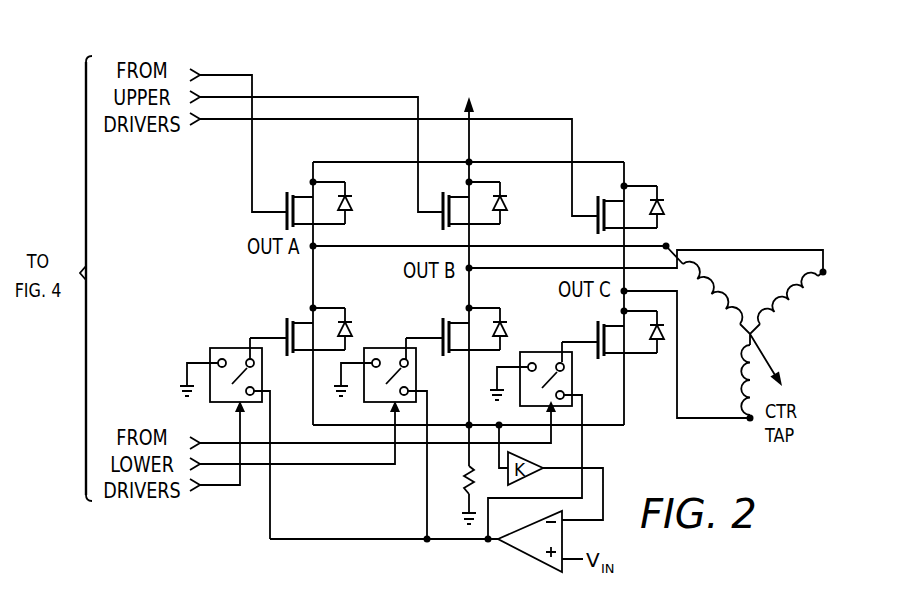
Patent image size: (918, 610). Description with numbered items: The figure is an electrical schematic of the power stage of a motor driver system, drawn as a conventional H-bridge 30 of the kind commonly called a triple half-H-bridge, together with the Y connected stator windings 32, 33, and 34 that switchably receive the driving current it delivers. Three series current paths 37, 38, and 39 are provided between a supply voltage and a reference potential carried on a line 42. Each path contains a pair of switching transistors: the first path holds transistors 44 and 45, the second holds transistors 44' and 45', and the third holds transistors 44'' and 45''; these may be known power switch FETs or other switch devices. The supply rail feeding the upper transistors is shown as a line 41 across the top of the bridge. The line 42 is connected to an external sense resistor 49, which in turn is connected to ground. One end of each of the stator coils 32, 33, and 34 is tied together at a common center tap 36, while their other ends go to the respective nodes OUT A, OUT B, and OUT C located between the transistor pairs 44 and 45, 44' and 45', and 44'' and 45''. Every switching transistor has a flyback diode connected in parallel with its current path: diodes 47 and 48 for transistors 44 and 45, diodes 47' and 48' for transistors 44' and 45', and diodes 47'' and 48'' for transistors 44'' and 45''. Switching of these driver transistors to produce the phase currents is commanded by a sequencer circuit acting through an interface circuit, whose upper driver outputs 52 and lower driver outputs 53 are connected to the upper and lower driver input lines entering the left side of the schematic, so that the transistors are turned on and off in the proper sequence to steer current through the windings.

The H-bridge 30 is at (738, 82).
The stator winding 32 is at (722, 290).
The stator winding 33 is at (790, 286).
The stator winding 34 is at (735, 382).
The common center tap 36 is at (748, 334).
The series current path 37 is at (386, 86).
The series current path 38 is at (539, 107).
The series current path 39 is at (646, 156).
The supply rail 41 is at (542, 166).
The line 42 is at (437, 425).
The switching transistor 44 is at (279, 221).
The switching transistor 44' is at (444, 219).
The switching transistor 44'' is at (600, 221).
The switching transistor 45 is at (290, 333).
The switching transistor 45' is at (444, 334).
The switching transistor 45'' is at (599, 335).
The flyback diode 47 is at (361, 177).
The flyback diode 47' is at (516, 177).
The flyback diode 47'' is at (674, 188).
The flyback diode 48 is at (356, 311).
The flyback diode 48' is at (514, 311).
The flyback diode 48'' is at (659, 359).
The external sense resistor 49 is at (462, 480).
The upper driver outputs 52 is at (217, 62).
The lower driver outputs 53 is at (207, 494).